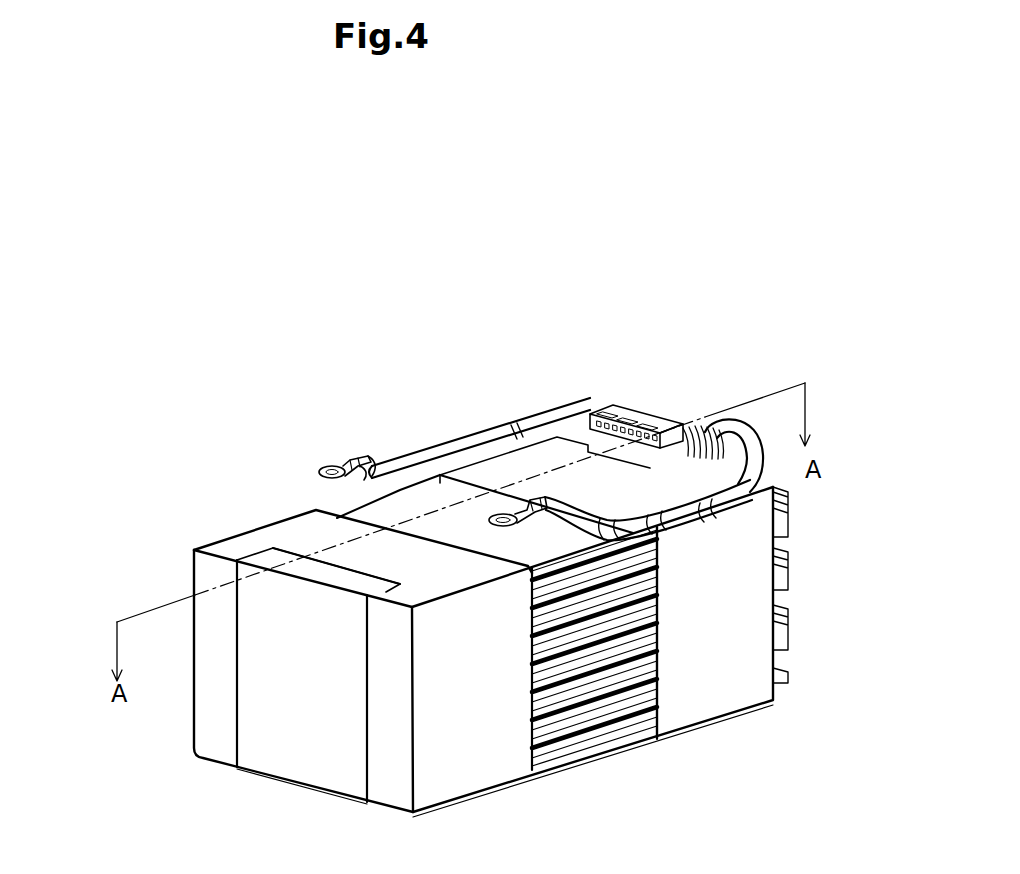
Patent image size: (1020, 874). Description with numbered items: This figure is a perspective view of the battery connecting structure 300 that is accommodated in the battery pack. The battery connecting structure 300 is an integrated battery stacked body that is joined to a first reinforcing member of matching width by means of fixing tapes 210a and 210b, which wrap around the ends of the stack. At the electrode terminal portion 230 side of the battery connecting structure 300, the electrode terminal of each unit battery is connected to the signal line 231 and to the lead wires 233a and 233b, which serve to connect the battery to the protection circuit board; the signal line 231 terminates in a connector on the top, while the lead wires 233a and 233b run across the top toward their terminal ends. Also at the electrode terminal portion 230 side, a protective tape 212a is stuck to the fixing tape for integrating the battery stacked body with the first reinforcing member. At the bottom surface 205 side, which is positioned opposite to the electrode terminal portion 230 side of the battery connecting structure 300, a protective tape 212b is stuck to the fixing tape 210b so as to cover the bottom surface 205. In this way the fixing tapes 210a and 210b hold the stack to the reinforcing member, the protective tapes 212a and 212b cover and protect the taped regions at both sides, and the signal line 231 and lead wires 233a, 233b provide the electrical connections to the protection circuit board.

The battery connecting structure 300 is at (247, 300).
The bottom surface 205 is at (603, 748).
The fixing tape 210a is at (708, 680).
The fixing tape 210b is at (293, 530).
The protective tape 212a is at (738, 432).
The protective tape 212b is at (273, 560).
The electrode terminal portion 230 is at (812, 525).
The signal line 231 is at (635, 402).
The lead wire 233a is at (417, 445).
The lead wire 233b is at (670, 507).